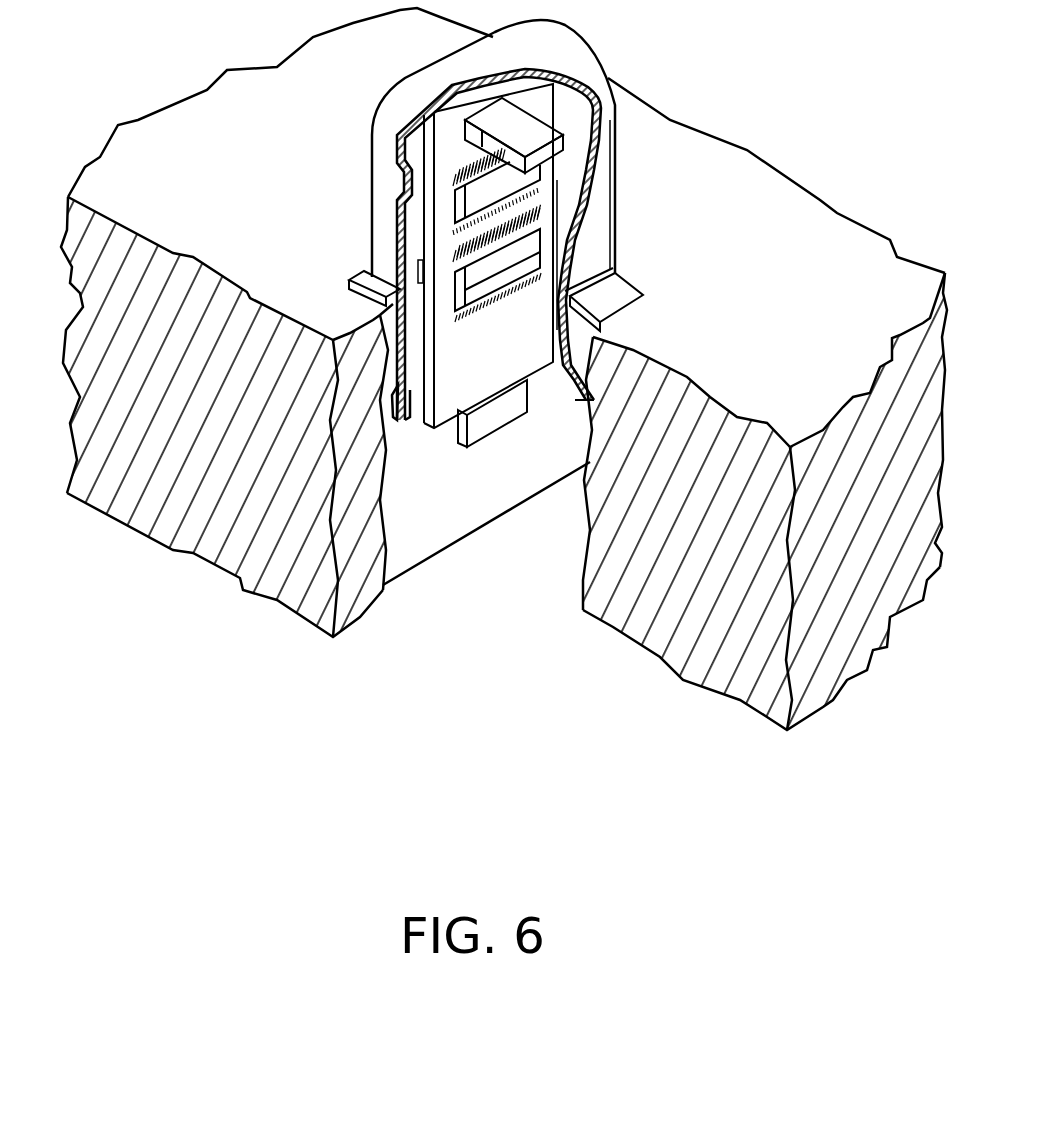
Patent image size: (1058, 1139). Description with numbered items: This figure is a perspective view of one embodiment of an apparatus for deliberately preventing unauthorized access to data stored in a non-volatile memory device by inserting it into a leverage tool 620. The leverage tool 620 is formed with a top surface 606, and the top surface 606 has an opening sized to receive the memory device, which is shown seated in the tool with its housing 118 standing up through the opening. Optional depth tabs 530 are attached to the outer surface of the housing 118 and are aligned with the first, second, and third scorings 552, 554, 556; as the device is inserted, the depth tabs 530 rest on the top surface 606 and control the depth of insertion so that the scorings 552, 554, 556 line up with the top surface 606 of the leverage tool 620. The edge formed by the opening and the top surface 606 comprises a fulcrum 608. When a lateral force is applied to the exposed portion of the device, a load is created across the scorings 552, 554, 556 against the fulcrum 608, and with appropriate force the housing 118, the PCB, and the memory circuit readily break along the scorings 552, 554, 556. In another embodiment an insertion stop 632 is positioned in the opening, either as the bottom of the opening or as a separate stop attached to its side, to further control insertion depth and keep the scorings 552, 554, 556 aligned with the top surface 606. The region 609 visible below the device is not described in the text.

The housing 118 is at (603, 133).
The depth tabs 530 is at (372, 268).
The first scoring 552 is at (480, 300).
The second scoring 554 is at (452, 280).
The third scoring 556 is at (617, 277).
The top surface 606 is at (832, 372).
The fulcrum 608 is at (366, 306).
The slot floor 609 is at (497, 608).
The leverage tool 620 is at (782, 112).
The insertion stop 632 is at (575, 400).